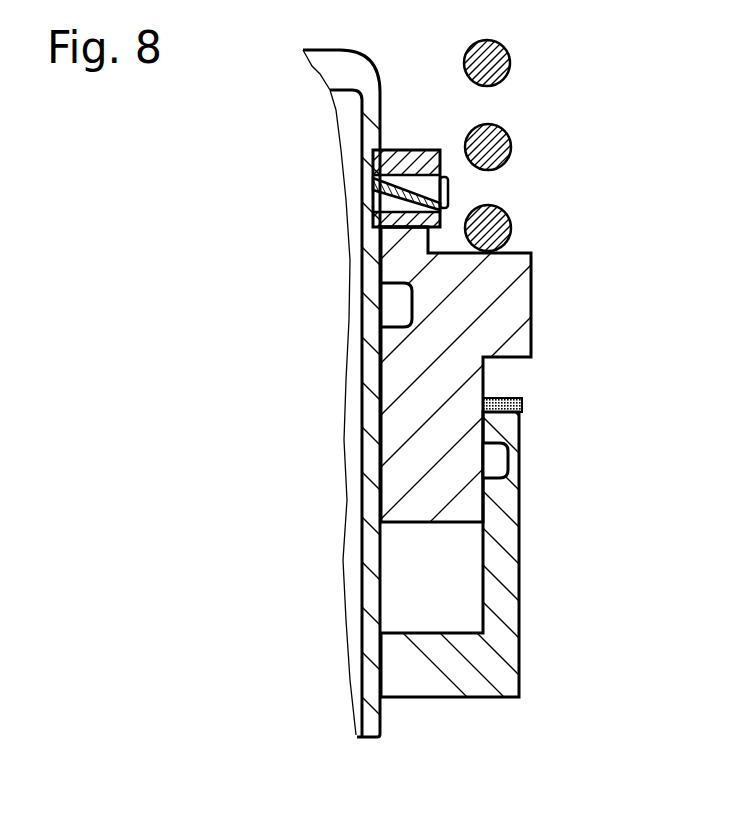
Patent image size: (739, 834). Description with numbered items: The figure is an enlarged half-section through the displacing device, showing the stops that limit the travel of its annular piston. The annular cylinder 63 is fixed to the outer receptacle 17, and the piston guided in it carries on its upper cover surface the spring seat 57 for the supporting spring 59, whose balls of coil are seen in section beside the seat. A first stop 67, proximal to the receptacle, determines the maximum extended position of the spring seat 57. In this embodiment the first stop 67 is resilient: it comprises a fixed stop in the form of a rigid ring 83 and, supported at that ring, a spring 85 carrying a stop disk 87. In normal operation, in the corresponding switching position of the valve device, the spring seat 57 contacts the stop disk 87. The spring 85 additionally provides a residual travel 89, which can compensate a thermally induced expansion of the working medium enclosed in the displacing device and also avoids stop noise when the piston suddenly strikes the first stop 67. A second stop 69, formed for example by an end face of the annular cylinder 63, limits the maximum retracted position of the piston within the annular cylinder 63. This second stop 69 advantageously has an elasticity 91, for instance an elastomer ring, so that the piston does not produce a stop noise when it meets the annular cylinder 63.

The outer receptacle 17 is at (338, 70).
The rigid ring 83 is at (403, 163).
The spring 85 is at (373, 198).
The stop disk 87 is at (387, 232).
The residual travel 89 is at (450, 195).
The first stop 67 is at (435, 133).
The supporting spring 59 is at (508, 150).
The spring seat 57 is at (520, 250).
The elasticity 91 is at (505, 396).
The second stop 69 is at (567, 363).
The annular cylinder 63 is at (502, 612).